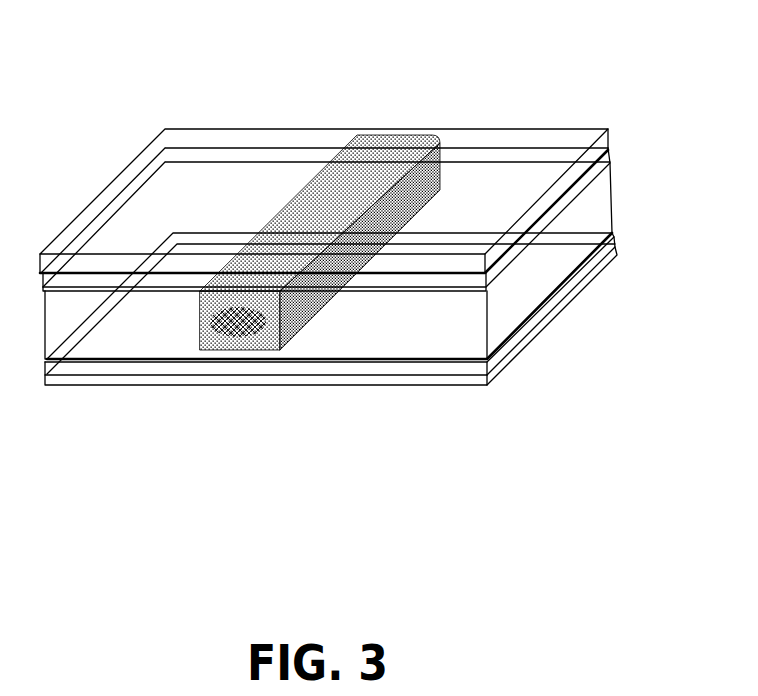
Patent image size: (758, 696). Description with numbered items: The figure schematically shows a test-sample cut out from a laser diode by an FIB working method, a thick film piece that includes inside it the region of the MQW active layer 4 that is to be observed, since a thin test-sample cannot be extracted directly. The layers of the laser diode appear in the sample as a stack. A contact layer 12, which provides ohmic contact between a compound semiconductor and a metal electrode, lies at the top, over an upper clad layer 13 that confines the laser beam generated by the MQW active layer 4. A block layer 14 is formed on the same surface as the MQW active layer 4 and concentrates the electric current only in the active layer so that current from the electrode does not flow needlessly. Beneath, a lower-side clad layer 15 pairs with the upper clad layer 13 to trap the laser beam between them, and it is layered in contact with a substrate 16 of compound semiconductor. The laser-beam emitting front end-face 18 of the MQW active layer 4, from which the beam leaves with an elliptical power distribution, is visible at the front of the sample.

The MQW active layer 4 is at (390, 143).
The contact layer 12 is at (582, 138).
The clad layer 13 is at (607, 158).
The block layer 14 is at (607, 207).
The lower-side clad layer 15 is at (610, 242).
The substrate 16 is at (613, 253).
The laser-beam emitting front end-face 18 is at (223, 327).